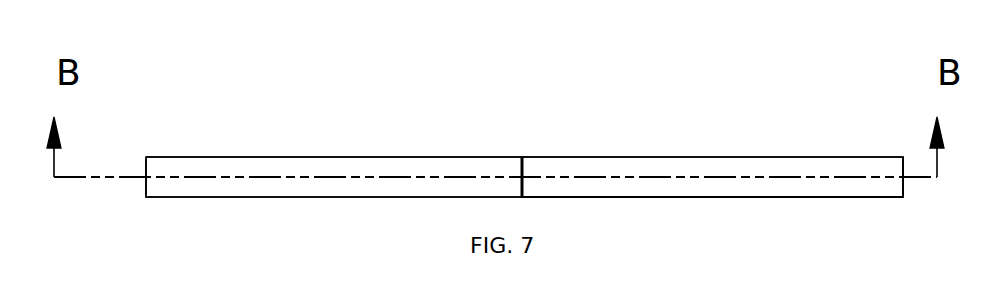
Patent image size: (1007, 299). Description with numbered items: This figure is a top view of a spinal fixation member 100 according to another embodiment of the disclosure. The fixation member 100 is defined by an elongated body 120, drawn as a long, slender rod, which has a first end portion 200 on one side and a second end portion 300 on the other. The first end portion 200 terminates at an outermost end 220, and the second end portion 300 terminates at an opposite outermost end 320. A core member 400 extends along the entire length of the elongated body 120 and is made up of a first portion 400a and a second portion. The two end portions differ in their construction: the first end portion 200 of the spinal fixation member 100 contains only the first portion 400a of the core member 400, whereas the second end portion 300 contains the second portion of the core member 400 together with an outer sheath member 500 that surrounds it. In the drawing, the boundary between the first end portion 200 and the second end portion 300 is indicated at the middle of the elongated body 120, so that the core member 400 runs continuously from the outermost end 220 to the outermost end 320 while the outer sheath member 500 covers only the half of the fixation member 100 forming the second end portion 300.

The fixation member 100 is at (399, 153).
The elongated body 120 is at (562, 153).
The first end portion 200 is at (846, 200).
The outermost end 220 is at (903, 186).
The second end portion 300 is at (236, 200).
The outermost end 320 is at (146, 168).
The core member 400 is at (654, 153).
The first portion 400a is at (678, 187).
The outer sheath member 500 is at (279, 157).